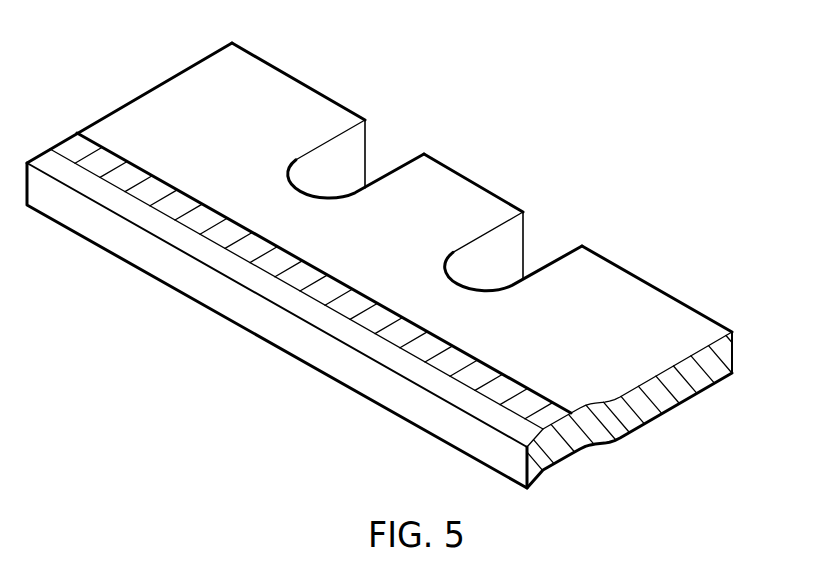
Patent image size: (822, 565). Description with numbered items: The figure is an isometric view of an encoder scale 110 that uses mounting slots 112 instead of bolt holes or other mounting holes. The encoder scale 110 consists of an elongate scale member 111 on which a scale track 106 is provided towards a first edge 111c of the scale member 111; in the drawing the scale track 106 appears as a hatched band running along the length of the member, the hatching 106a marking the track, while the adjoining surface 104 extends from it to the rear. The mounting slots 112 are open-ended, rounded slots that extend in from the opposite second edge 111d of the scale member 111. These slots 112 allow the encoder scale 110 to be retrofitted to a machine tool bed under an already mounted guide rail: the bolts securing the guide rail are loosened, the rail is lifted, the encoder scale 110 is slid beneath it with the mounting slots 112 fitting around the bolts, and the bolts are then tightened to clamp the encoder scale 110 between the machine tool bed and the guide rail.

The rear edge portion of top surface 104 is at (310, 82).
The scale track 106 is at (143, 168).
The ribs 106a is at (90, 153).
The encoder scale 110 is at (677, 242).
The scale member 111 is at (223, 90).
The first edge 111c is at (335, 368).
The second edge 111d is at (513, 207).
The mounting slots 112 is at (353, 150).